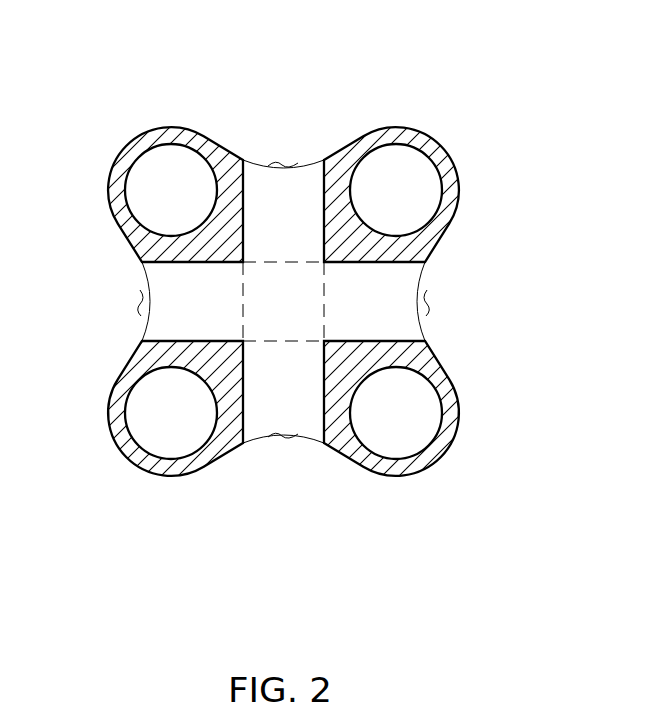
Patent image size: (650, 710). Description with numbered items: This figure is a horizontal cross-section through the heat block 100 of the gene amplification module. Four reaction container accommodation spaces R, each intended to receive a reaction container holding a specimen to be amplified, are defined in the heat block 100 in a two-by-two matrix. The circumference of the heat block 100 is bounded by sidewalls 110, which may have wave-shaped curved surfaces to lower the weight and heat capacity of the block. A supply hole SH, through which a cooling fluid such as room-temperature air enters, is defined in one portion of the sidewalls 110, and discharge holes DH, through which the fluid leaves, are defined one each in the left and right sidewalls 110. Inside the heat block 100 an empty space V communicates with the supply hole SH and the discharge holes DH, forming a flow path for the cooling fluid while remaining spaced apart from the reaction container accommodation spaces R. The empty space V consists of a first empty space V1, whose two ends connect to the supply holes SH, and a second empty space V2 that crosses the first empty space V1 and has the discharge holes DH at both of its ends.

The heat block 100 is at (387, 70).
The sidewall 110 is at (325, 313).
The supply hole SH is at (286, 160).
The discharge hole DH is at (140, 300).
The first empty space V1 is at (320, 187).
The second empty space V2 is at (393, 278).
The empty space V is at (520, 183).
The reaction container accommodation space R is at (398, 420).